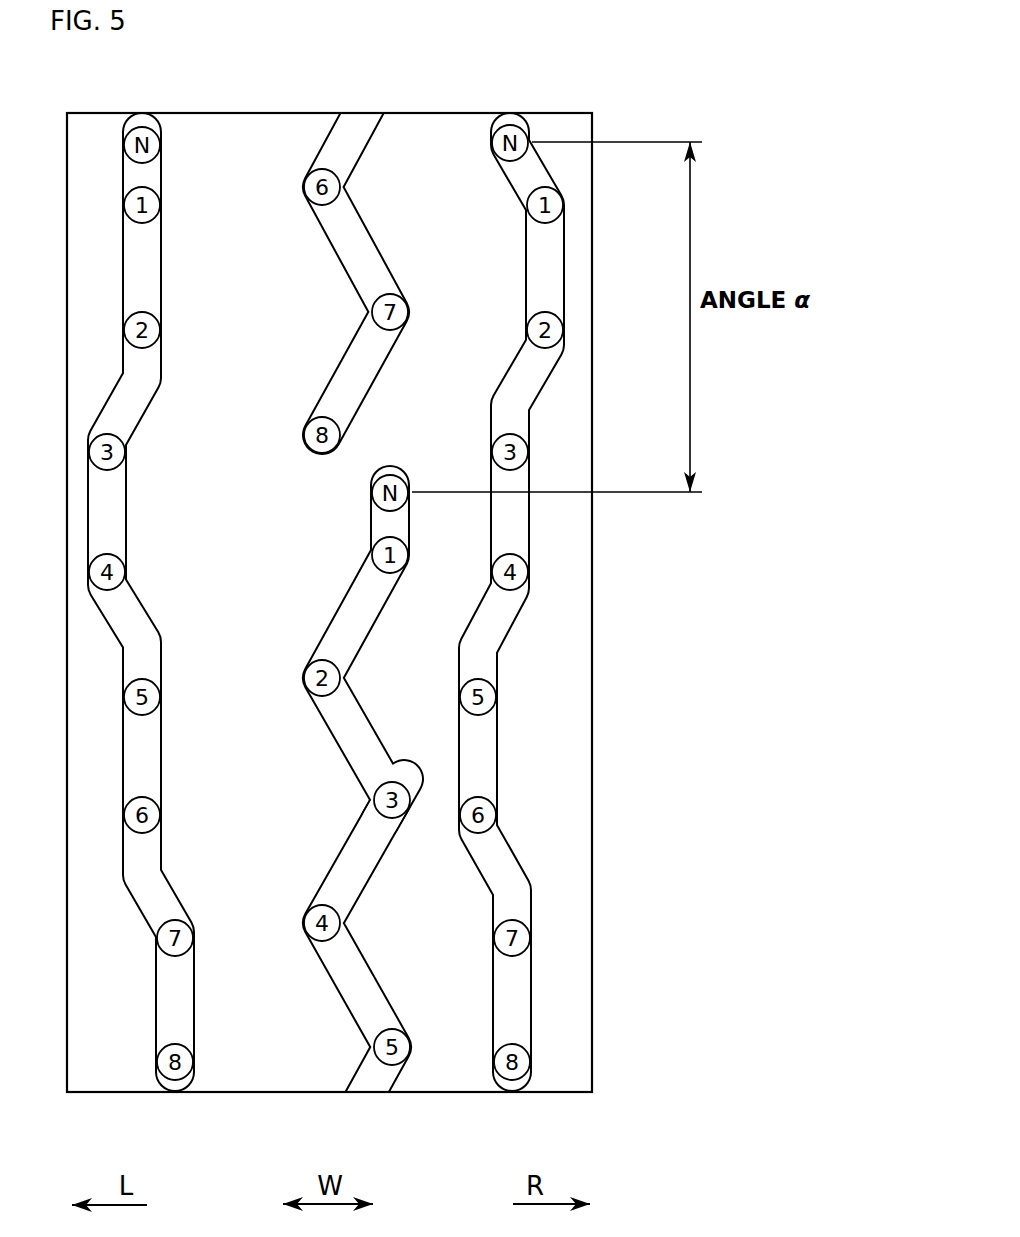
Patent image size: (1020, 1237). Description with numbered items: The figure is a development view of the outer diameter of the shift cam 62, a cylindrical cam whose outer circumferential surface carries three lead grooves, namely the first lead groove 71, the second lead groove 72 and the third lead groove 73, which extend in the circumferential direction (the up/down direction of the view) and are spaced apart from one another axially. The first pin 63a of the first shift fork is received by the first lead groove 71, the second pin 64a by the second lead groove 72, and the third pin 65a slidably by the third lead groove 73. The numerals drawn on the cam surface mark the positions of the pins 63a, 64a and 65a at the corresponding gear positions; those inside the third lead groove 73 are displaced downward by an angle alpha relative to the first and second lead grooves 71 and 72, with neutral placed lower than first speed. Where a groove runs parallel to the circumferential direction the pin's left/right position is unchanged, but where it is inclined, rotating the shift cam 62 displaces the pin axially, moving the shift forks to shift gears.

The shift cam 62 is at (387, 587).
The first pin 63a is at (511, 602).
The second pin 64a is at (141, 602).
The third pin 65a is at (363, 592).
The first lead groove 71 is at (495, 893).
The second lead groove 72 is at (158, 893).
The third lead groove 73 is at (363, 942).